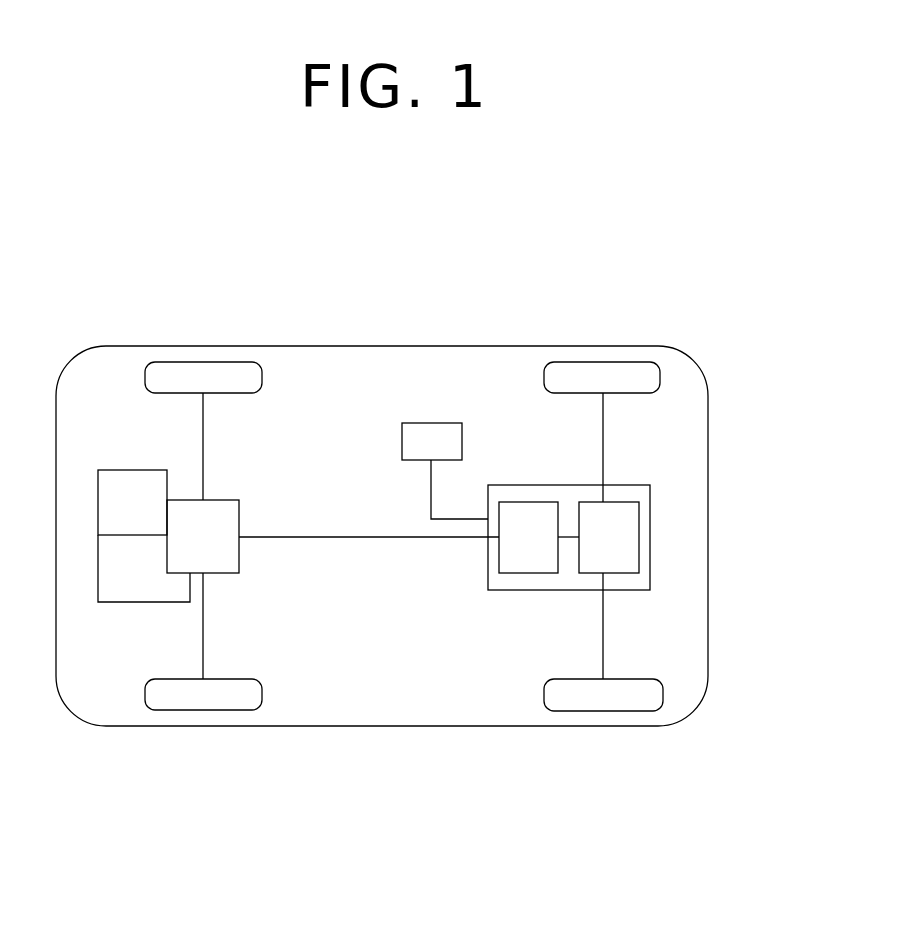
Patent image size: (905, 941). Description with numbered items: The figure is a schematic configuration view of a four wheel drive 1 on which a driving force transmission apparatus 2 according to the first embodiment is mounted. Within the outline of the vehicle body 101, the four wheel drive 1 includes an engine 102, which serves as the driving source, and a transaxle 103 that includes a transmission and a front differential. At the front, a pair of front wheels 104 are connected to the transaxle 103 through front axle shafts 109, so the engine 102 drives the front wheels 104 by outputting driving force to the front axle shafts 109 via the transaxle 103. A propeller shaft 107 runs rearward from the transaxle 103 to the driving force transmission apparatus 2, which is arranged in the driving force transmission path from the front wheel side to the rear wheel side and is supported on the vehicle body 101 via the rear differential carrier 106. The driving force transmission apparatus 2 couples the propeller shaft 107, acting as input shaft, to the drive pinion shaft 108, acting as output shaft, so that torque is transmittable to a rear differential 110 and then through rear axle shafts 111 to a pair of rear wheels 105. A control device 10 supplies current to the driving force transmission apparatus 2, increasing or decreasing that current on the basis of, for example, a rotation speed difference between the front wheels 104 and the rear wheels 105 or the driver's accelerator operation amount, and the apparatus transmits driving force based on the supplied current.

The four wheel drive 1 is at (160, 305).
The driving force transmission apparatus 2 is at (528, 575).
The control device 10 is at (431, 420).
The vehicle body 101 is at (708, 427).
The engine 102 is at (132, 468).
The transaxle 103 is at (130, 604).
The front wheels 104 is at (203, 362).
The rear wheels 105 is at (602, 362).
The rear differential carrier 106 is at (560, 485).
The propeller shaft 107 is at (356, 535).
The drive pinion shaft 108 is at (577, 538).
The front axle shafts 109 is at (207, 453).
The rear differential 110 is at (618, 575).
The rear axle shafts 111 is at (605, 448).